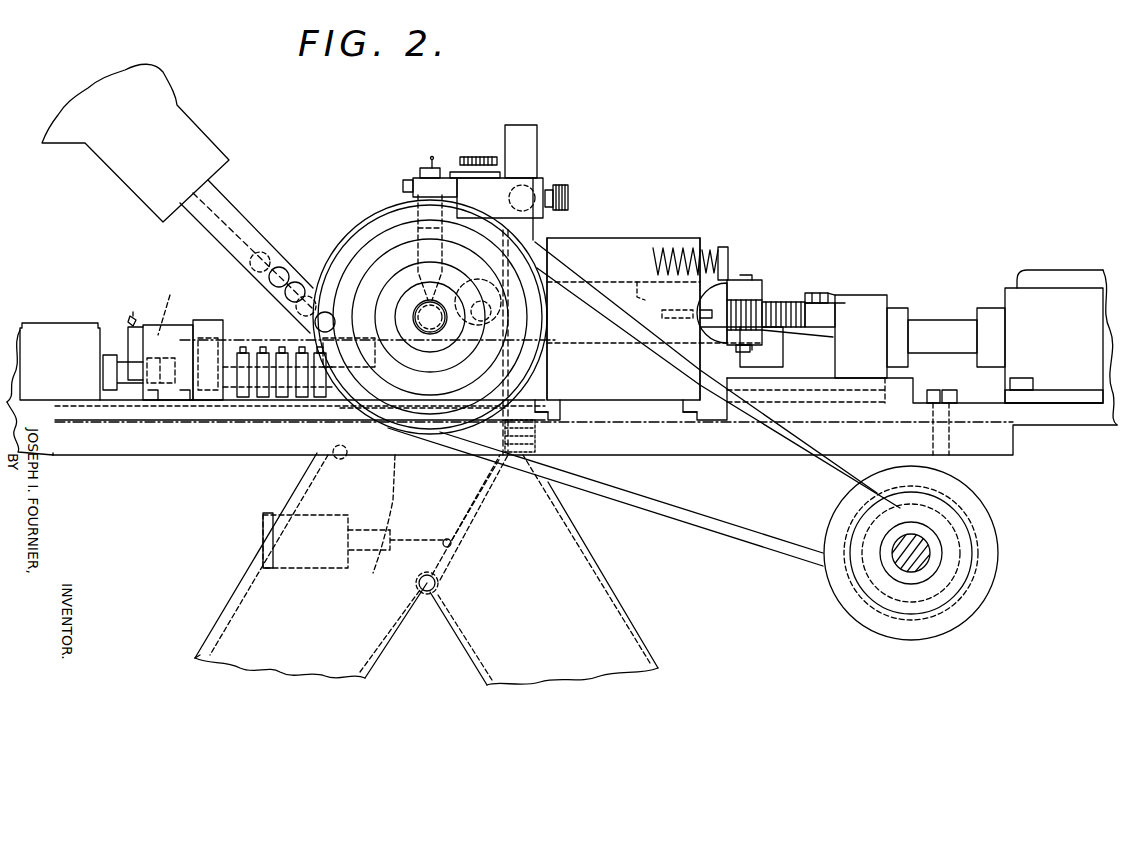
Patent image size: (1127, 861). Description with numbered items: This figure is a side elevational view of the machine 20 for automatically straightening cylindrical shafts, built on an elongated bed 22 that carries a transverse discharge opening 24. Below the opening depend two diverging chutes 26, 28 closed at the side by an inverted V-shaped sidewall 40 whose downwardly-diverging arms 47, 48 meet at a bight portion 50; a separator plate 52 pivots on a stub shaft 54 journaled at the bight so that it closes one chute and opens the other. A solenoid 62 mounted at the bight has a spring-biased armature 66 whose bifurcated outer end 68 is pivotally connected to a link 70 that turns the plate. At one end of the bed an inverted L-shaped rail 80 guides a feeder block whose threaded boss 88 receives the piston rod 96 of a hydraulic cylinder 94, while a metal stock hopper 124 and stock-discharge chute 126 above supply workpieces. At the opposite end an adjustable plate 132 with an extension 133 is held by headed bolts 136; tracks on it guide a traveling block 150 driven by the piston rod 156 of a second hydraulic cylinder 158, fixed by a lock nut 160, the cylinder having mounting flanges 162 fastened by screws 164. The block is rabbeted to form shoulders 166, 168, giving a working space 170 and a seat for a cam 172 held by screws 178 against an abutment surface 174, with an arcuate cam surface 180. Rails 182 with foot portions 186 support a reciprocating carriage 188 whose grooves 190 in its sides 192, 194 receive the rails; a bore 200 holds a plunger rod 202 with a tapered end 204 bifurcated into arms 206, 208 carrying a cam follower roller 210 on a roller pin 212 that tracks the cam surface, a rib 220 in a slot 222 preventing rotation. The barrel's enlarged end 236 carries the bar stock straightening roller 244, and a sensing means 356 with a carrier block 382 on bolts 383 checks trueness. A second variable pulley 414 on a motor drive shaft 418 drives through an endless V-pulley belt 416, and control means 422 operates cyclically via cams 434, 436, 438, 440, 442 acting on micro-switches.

The machine 20 is at (648, 158).
The bed or base plate 22 is at (147, 455).
The discharge opening 24 is at (300, 463).
The chute 26 is at (222, 597).
The chute 28 is at (634, 613).
The sidewall 40 is at (193, 648).
The arm 47 is at (275, 663).
The arm 48 is at (540, 680).
The bight portion 50 is at (397, 514).
The separator plate 52 is at (470, 515).
The stub shaft 54 is at (440, 583).
The solenoid 62 is at (140, 318).
The armature 66 is at (369, 565).
The bifurcated outer end 68 is at (385, 514).
The link 70 is at (444, 538).
The rail 80 is at (86, 452).
The boss 88 is at (190, 337).
The hydraulic cylinder 94 is at (74, 330).
The piston rod 96 is at (132, 395).
The metal stock hopper 124 is at (212, 122).
The stock-discharge chute 126 is at (248, 198).
The adjustable plate 132 is at (978, 422).
The extension 133 is at (1065, 432).
The headed bolt 136 is at (955, 390).
The traveling block 150 is at (870, 298).
The piston rod 156 is at (932, 318).
The hydraulic cylinder 158 is at (1100, 285).
The lock nut 160 is at (900, 310).
The mounting flange 162 is at (1055, 390).
The screw 164 is at (1030, 378).
The shoulder 166 is at (758, 370).
The shoulder 168 is at (833, 310).
The working space 170 is at (782, 355).
The cam 172 is at (804, 293).
The abutment surface 174 is at (838, 305).
The screw 178 is at (830, 296).
The cam surface 180 is at (797, 312).
The rail 182 is at (549, 418).
The foot portion 186 is at (548, 405).
The carriage 188 is at (630, 238).
The groove 190 is at (560, 413).
The side 192 is at (548, 362).
The side 194 is at (706, 340).
The bore 200 is at (665, 300).
The plunger rod 202 is at (712, 290).
The tapered end 204 is at (735, 285).
The arm 206 is at (765, 290).
The arm 208 is at (815, 335).
The cam follower roller 210 is at (731, 349).
The roller pin 212 is at (755, 282).
The rib 220 is at (726, 240).
The slot 222 is at (730, 225).
The enlarged end 236 is at (578, 236).
The bar stock straightening roller 244 is at (490, 345).
The sensing means 356 is at (475, 143).
The carrier block 382 is at (495, 185).
The bolt 383 is at (500, 165).
The second variable pulley 414 is at (990, 515).
The endless V-pulley belt 416 is at (720, 537).
The drive shaft 418 is at (930, 550).
The control means 422 is at (223, 455).
The cam 434 is at (243, 400).
The cam 436 is at (264, 400).
The cam 438 is at (283, 400).
The cam 440 is at (303, 400).
The cam 442 is at (321, 400).